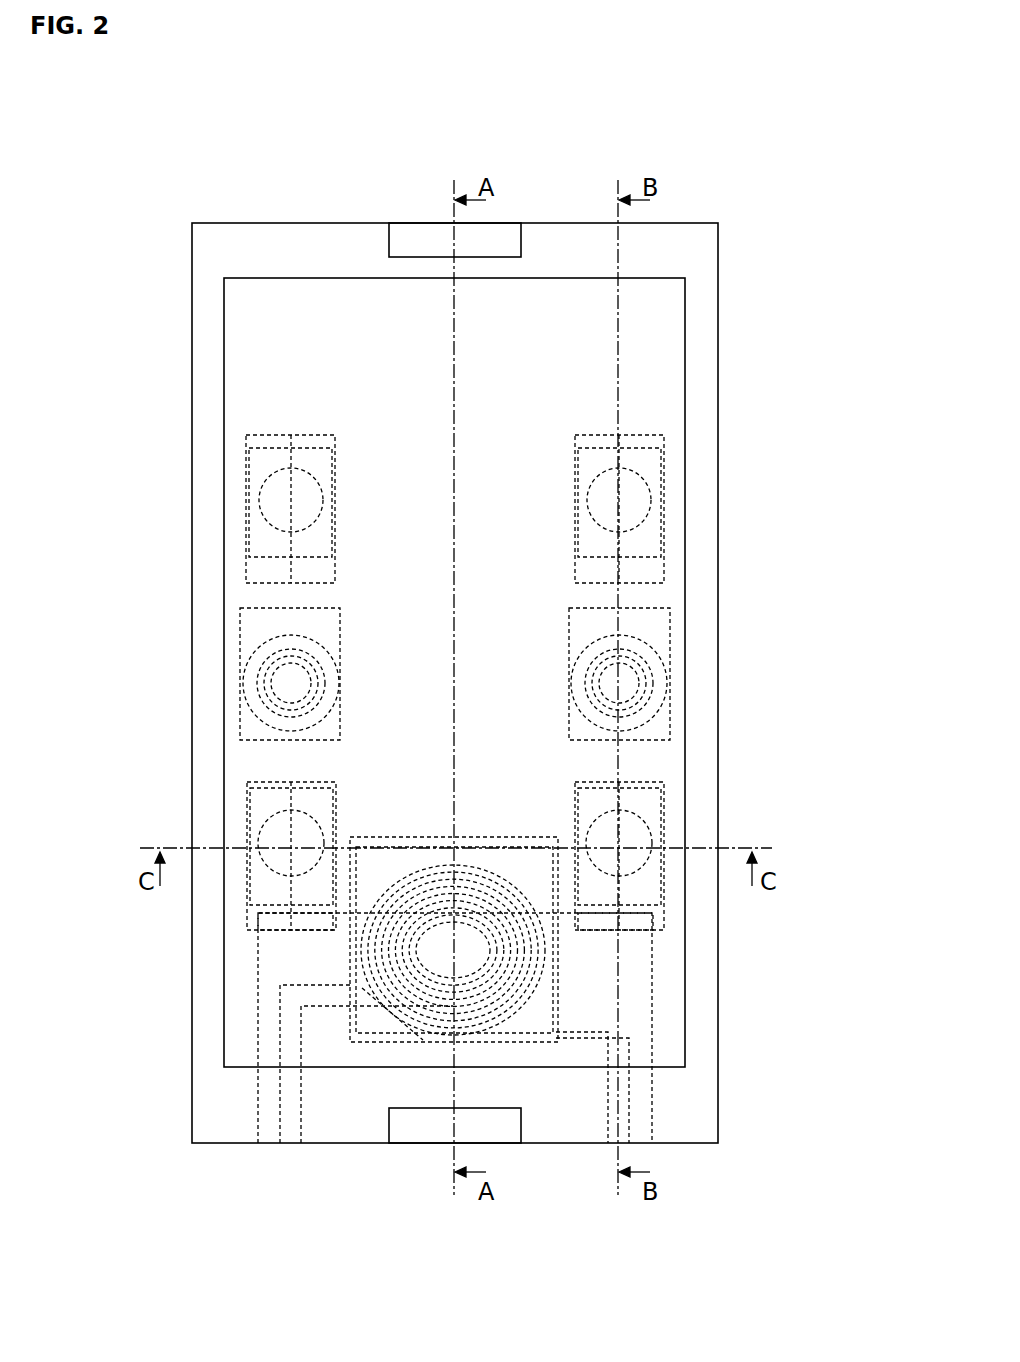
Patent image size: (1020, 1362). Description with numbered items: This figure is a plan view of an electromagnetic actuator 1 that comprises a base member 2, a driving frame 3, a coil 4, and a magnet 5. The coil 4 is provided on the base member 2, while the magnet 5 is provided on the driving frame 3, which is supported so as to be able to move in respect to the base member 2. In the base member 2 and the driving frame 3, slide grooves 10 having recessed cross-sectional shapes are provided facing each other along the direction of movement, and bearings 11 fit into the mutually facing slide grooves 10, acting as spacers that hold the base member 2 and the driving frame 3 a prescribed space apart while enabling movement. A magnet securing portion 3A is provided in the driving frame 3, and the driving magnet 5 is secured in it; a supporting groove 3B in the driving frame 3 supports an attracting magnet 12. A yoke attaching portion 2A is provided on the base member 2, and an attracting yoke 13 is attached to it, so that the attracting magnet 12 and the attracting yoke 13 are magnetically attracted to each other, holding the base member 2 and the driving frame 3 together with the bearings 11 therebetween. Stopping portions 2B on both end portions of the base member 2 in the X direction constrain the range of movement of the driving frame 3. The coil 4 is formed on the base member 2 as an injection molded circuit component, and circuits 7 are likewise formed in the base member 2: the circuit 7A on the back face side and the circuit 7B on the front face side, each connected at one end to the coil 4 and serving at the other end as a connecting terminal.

The electromagnetic actuator 1 is at (783, 198).
The base member 2 is at (719, 394).
The yoke attaching portion 2A is at (250, 636).
The stopping portion 2B is at (522, 243).
The driving frame 3 is at (686, 312).
The magnet securing portion 3A is at (569, 983).
The supporting groove 3B is at (457, 661).
The coil 4 is at (560, 1004).
The magnet 5 is at (380, 1042).
The circuit 7 is at (480, 1049).
The circuit 7A is at (285, 1094).
The circuit 7B is at (630, 1092).
The slide groove 10 is at (290, 545).
The bearing 11 is at (292, 463).
The attracting magnet 12 is at (240, 622).
The attracting yoke 13 is at (262, 690).